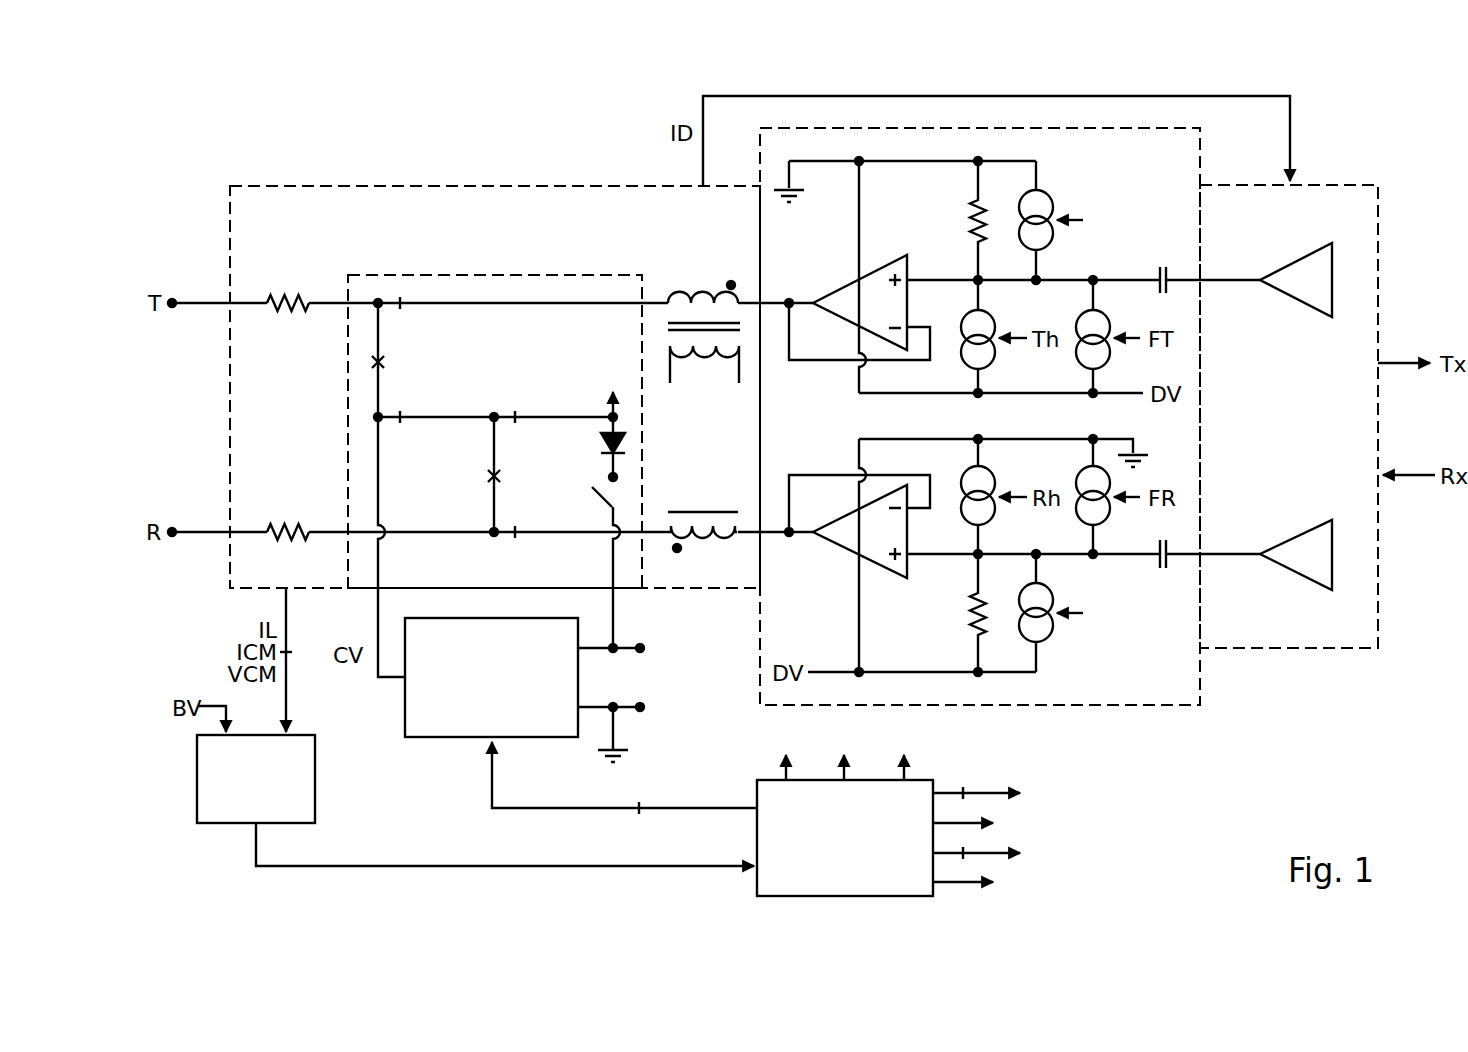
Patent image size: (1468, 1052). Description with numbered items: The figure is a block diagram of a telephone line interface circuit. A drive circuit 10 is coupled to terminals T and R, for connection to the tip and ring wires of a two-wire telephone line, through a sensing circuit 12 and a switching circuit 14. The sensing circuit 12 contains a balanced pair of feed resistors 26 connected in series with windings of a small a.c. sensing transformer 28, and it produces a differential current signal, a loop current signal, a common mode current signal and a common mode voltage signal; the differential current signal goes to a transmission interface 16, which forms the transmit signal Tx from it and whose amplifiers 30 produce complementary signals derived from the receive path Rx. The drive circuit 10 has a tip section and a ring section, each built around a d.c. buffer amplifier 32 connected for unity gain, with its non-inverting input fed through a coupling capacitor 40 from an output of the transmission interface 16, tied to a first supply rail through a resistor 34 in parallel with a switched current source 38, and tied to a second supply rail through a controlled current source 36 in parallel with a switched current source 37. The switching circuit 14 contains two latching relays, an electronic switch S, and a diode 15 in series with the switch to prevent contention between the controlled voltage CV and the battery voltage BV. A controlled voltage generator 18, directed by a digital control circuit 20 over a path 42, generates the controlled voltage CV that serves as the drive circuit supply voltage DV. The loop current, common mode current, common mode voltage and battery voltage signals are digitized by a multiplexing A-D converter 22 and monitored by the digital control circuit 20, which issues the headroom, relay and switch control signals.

The drive circuit 10 is at (1177, 680).
The sensing circuit 12 is at (455, 188).
The switching circuit 14 is at (447, 490).
The diode 15 is at (598, 444).
The transmission interface 16 is at (1352, 640).
The controlled voltage generator 18 is at (448, 724).
The digital control circuit 20 is at (770, 797).
The multiplexing analog-to-digital converter 22 is at (306, 757).
The feed resistors 26 is at (287, 313).
The sensing transformer 28 is at (698, 512).
The amplifiers 30 is at (1302, 287).
The d.c. buffer amplifier 32 is at (850, 297).
The resistor 34 is at (964, 222).
The controlled current source 36 is at (986, 319).
The switched current source 37 is at (1083, 355).
The switched current source 38 is at (1047, 200).
The coupling capacitor 40 is at (1163, 265).
The path 42 is at (571, 805).